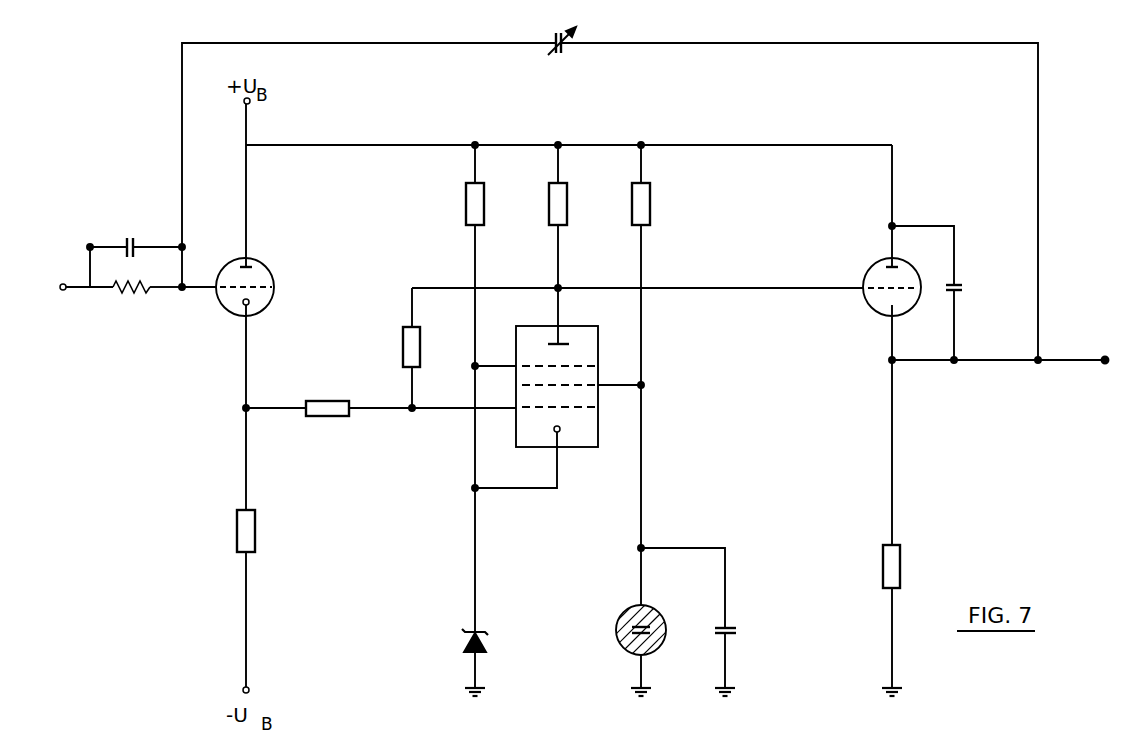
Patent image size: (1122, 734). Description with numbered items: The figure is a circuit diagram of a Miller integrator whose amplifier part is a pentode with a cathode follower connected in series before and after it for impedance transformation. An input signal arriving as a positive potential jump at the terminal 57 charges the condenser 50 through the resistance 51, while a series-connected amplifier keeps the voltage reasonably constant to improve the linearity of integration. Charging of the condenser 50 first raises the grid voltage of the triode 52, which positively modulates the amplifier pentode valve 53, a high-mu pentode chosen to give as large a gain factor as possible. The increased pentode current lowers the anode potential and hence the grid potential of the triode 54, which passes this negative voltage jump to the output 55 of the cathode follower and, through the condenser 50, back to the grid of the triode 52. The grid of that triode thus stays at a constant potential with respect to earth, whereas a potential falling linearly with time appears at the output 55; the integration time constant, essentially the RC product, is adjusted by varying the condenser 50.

The variable condenser 50 is at (573, 37).
The resistance 51 is at (131, 294).
The triode 52 is at (253, 283).
The amplifier pentode valve 53 is at (580, 344).
The triode 54 is at (878, 283).
The output 55 is at (1104, 357).
The terminal 57 is at (51, 275).